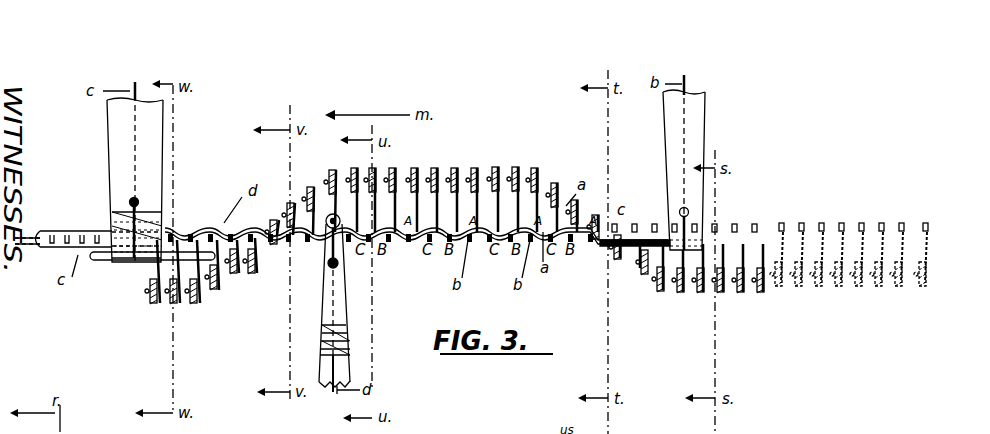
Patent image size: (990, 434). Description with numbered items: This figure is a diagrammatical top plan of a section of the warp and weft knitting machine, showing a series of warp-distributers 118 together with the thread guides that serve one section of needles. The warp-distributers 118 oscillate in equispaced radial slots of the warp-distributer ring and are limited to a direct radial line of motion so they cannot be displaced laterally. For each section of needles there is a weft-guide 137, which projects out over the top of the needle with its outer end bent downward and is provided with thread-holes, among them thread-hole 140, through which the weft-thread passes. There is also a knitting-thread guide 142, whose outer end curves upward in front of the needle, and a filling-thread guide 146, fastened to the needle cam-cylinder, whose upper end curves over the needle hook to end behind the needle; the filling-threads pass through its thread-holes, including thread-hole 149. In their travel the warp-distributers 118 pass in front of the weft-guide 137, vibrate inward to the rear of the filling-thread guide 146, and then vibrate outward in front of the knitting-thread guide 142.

The warp-distributer 118 is at (740, 302).
The weft-guide 137 is at (668, 146).
The thread-hole 140 is at (736, 202).
The knitting-thread guide 142 is at (118, 292).
The filling-thread guide 146 is at (350, 338).
The thread-hole 149 is at (327, 262).